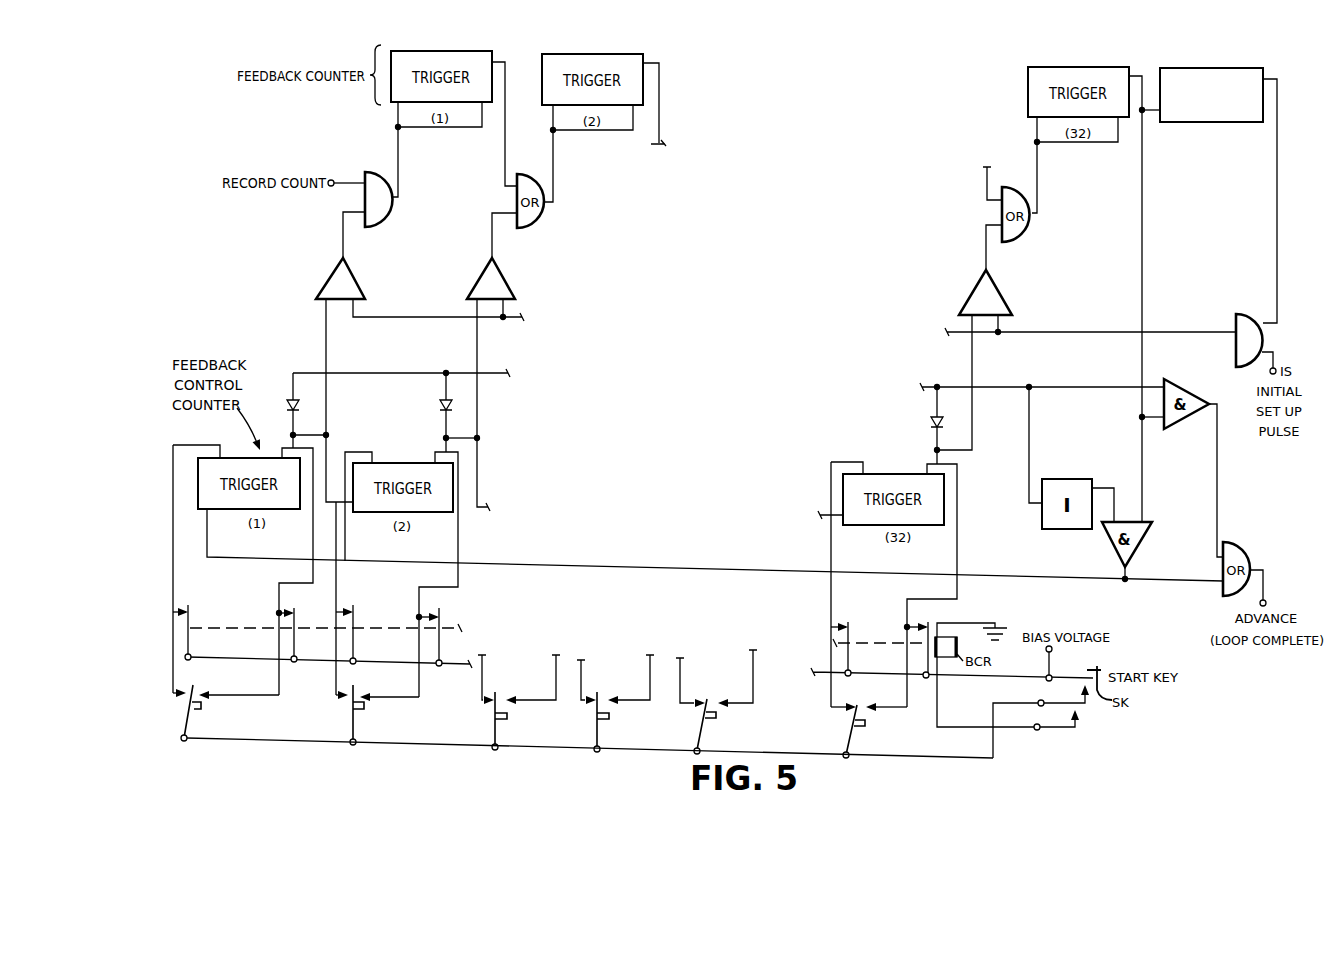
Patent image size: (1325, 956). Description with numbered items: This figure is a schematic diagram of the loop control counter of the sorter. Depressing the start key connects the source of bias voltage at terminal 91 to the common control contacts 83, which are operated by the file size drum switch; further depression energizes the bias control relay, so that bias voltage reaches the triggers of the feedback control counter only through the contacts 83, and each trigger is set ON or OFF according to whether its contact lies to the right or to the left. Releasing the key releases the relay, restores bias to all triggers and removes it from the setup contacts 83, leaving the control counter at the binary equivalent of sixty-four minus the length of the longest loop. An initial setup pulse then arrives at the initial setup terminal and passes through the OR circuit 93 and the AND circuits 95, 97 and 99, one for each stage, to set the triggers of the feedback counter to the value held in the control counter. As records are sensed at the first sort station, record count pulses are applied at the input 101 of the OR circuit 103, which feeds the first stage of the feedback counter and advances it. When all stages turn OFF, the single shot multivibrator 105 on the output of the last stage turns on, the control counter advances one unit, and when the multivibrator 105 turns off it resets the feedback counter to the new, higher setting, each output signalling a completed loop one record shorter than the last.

The common control contacts 83 is at (190, 719).
The bias voltage terminal 91 is at (1045, 651).
The OR circuit 93 is at (1241, 318).
The AND circuit 95 is at (352, 276).
The AND circuit 97 is at (500, 276).
The AND circuit 99 is at (1000, 279).
The input of OR circuit 101 is at (335, 178).
The OR circuit 103 is at (392, 205).
The single shot multivibrator 105 is at (1240, 68).